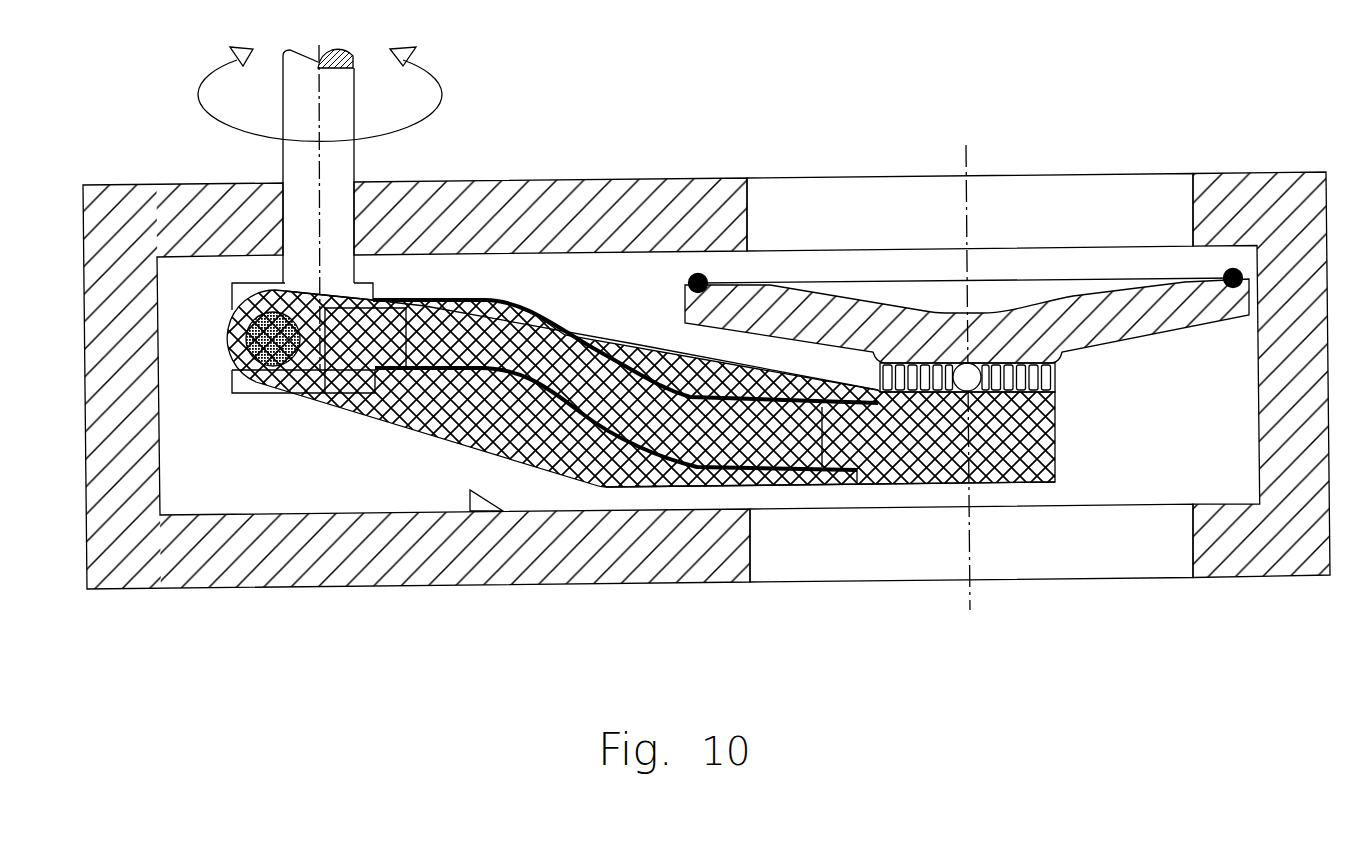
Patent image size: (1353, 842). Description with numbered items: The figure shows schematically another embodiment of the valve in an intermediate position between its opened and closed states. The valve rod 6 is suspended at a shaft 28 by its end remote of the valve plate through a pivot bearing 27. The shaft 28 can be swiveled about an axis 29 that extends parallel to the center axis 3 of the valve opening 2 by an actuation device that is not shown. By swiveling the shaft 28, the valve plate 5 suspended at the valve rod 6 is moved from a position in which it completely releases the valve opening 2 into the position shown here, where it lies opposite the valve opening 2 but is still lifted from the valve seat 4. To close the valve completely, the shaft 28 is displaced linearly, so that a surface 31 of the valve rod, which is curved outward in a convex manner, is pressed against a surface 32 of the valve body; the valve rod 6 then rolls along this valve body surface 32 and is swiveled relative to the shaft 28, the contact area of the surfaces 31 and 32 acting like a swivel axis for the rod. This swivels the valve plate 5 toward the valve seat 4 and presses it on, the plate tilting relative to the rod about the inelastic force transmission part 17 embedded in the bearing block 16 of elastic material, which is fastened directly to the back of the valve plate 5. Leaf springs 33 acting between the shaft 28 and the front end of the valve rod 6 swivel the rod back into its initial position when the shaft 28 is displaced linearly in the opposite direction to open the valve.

The valve opening 2 is at (817, 210).
The center axis 3 is at (968, 207).
The valve seat 4 is at (698, 248).
The valve plate 5 is at (1080, 325).
The valve rod 6 is at (437, 423).
The bearing block 16 is at (1003, 393).
The force transmission part 17 is at (963, 390).
The pivot bearing 27 is at (244, 430).
The shaft 28 is at (298, 166).
The axis 29 is at (322, 173).
The surface of the valve rod 31 is at (672, 488).
The surface of the valve body 32 is at (468, 490).
The leaf springs 33 is at (447, 368).